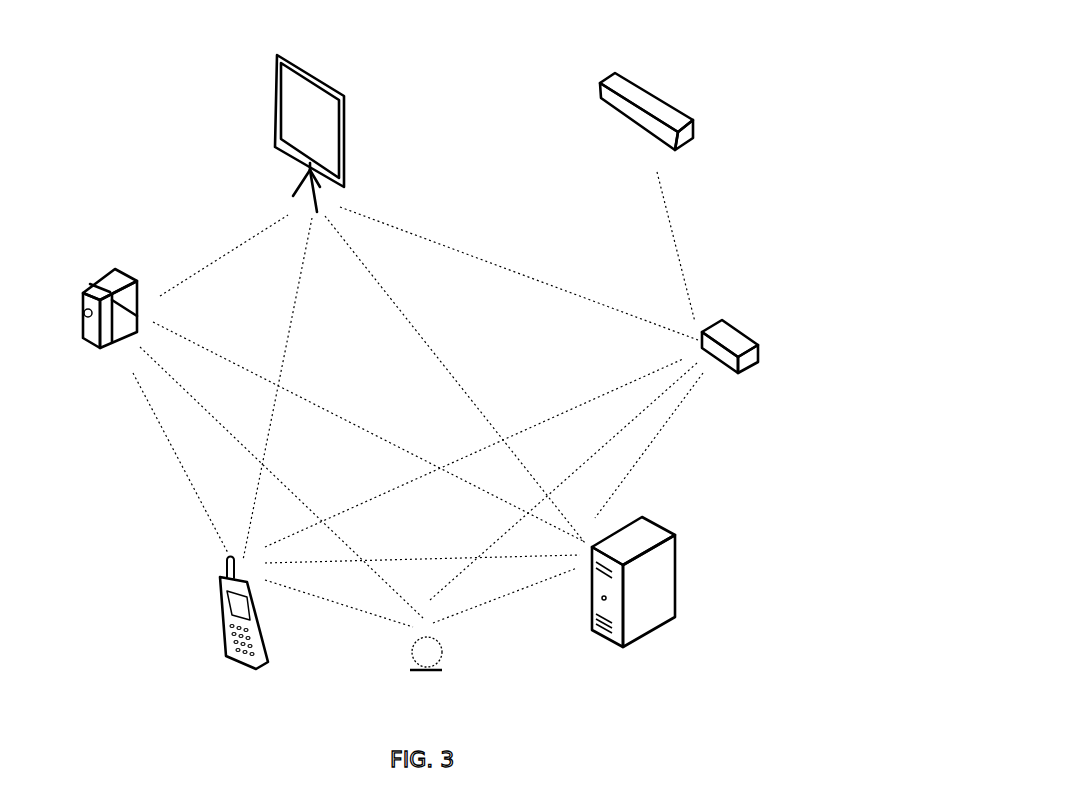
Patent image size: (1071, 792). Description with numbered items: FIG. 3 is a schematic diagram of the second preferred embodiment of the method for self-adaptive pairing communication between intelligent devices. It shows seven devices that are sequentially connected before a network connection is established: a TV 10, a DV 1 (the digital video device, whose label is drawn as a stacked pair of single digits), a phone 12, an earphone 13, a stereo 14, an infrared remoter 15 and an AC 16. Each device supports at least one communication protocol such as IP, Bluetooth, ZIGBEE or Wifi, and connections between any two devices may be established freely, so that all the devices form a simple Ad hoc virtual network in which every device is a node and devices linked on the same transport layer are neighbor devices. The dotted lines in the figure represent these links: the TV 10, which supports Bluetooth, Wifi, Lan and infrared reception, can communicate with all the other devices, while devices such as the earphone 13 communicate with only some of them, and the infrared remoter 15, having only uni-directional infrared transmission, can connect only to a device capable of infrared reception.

The camera 1 is at (128, 285).
The TV 10 is at (331, 130).
The phone 12 is at (215, 613).
The earphone 13 is at (453, 670).
The stereo 14 is at (665, 582).
The infrared remoter 15 is at (750, 333).
The AC 16 is at (666, 108).